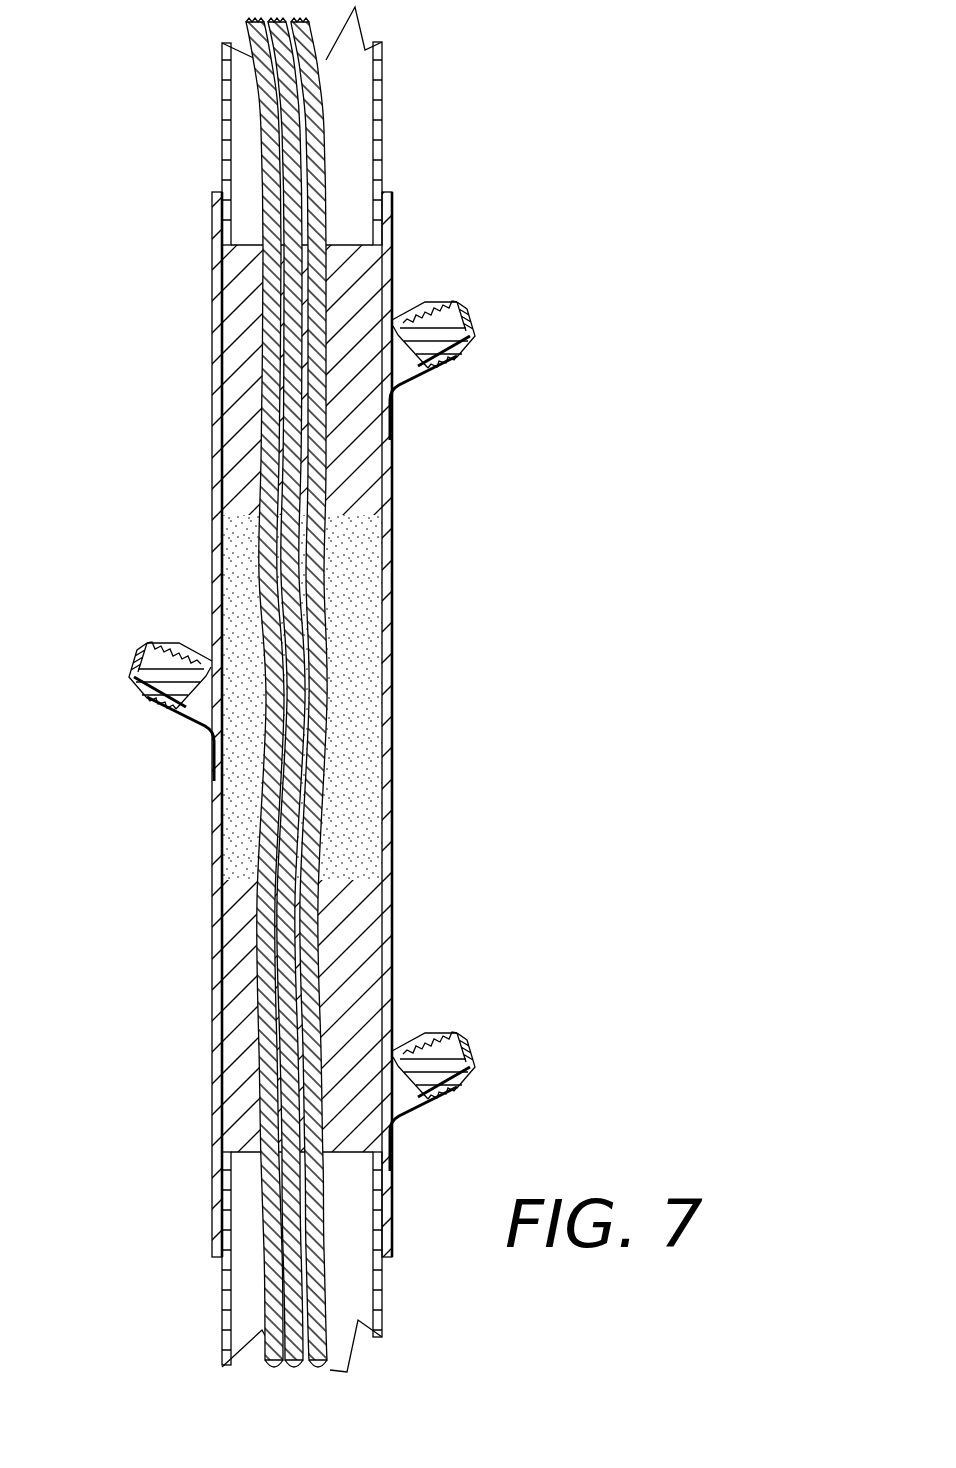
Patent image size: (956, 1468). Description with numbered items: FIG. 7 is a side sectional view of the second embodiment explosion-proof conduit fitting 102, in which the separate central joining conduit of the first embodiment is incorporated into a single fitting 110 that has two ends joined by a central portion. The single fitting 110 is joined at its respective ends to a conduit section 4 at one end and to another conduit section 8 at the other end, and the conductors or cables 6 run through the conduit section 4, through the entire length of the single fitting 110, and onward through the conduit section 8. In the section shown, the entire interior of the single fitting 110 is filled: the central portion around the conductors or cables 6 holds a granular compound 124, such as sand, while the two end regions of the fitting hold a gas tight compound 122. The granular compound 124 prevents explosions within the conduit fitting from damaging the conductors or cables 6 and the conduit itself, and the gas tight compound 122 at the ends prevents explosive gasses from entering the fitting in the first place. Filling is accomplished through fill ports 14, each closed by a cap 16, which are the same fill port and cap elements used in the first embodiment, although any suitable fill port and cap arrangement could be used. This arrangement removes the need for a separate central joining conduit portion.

The explosion-proof conduit fitting 102 is at (562, 189).
The conduit section 4 is at (230, 177).
The conduit section 8 is at (258, 1275).
The single fitting 110 is at (217, 397).
The gas tight compound 122 is at (357, 437).
The granular compound 124 is at (355, 643).
The conductors or cables 6 is at (325, 725).
The fill port 14 is at (415, 382).
The cap 16 is at (473, 336).